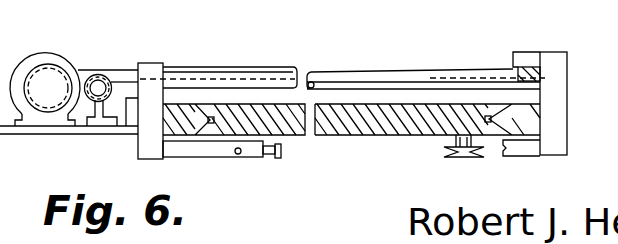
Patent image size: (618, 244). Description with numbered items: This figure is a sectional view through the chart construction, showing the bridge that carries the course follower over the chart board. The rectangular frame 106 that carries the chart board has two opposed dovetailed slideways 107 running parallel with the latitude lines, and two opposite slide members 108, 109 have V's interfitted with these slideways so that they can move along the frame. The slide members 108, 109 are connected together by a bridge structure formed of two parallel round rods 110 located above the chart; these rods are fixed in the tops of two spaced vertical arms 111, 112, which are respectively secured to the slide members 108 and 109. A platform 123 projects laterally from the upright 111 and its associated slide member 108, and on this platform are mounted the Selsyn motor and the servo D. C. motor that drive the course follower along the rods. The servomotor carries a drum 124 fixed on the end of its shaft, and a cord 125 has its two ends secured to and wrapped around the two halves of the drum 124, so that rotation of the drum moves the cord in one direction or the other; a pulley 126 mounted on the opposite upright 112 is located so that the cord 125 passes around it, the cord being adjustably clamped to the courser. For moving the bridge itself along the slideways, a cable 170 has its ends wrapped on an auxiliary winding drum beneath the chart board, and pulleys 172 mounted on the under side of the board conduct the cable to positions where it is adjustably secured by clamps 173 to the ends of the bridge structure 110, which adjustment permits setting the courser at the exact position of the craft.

The rectangular frame 106 is at (258, 119).
The dovetailed slideways 107 is at (214, 119).
The slide member 108 is at (179, 119).
The slide member 109 is at (427, 119).
The round rods 110 is at (375, 72).
The vertical arm 111 is at (149, 62).
The vertical arm 112 is at (556, 52).
The platform 123 is at (85, 137).
The drum 124 is at (50, 53).
The cord 125 is at (231, 67).
The pulley 126 is at (543, 74).
The cable 170 is at (240, 154).
The pulleys 172 is at (476, 159).
The clamps 173 is at (283, 152).